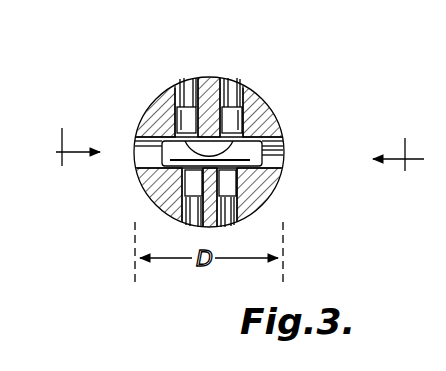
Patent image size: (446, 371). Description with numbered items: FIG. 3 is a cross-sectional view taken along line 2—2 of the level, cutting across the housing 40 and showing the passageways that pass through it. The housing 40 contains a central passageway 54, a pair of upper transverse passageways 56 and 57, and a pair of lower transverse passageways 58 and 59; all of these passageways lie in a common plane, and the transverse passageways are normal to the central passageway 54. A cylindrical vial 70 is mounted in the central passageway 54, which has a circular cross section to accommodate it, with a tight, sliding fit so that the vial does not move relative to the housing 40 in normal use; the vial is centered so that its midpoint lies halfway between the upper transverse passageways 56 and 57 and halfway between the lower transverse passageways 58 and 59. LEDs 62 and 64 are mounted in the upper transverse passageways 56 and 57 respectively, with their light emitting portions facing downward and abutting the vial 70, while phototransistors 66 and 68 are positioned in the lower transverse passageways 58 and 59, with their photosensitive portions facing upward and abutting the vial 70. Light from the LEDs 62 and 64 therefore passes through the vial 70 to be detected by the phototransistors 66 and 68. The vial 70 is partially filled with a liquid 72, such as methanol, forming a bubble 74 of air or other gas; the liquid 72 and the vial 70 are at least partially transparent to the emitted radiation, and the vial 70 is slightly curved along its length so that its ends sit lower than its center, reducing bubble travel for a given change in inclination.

The section line 2- 2 is at (50, 156).
The housing 40 is at (213, 86).
The central passageway 54 is at (136, 153).
The upper transverse passageway 56 is at (187, 83).
The upper transverse passageway 57 is at (240, 86).
The lower transverse passageway 58 is at (198, 212).
The lower transverse passageway 59 is at (222, 215).
The LED 62 is at (178, 116).
The LED 64 is at (238, 118).
The phototransistor 66 is at (190, 185).
The phototransistor 68 is at (233, 188).
The cylindrical vial 70 is at (268, 161).
The liquid 72 is at (262, 143).
The bubble 74 is at (160, 141).